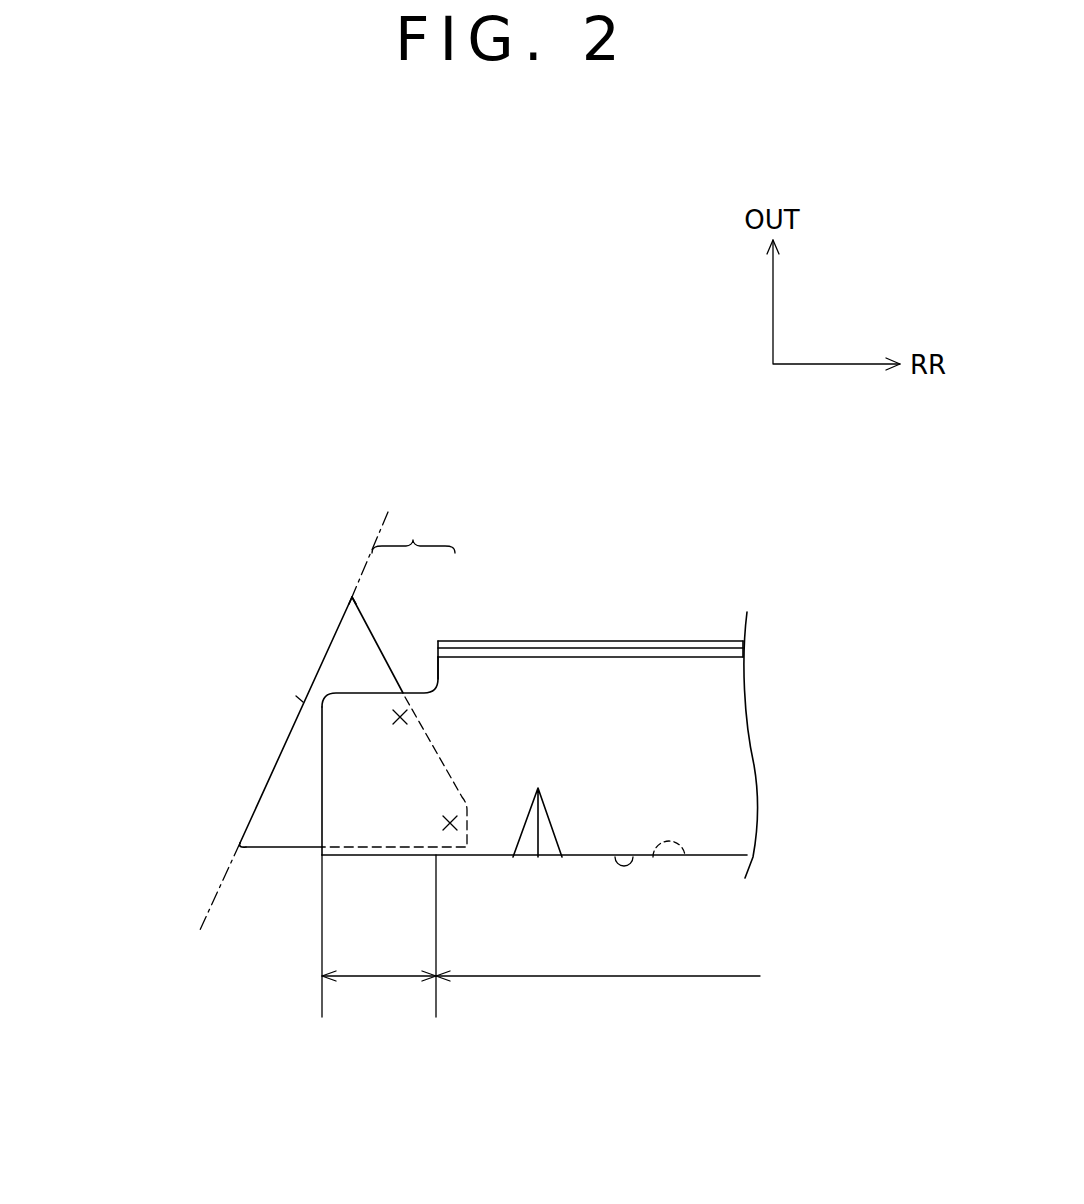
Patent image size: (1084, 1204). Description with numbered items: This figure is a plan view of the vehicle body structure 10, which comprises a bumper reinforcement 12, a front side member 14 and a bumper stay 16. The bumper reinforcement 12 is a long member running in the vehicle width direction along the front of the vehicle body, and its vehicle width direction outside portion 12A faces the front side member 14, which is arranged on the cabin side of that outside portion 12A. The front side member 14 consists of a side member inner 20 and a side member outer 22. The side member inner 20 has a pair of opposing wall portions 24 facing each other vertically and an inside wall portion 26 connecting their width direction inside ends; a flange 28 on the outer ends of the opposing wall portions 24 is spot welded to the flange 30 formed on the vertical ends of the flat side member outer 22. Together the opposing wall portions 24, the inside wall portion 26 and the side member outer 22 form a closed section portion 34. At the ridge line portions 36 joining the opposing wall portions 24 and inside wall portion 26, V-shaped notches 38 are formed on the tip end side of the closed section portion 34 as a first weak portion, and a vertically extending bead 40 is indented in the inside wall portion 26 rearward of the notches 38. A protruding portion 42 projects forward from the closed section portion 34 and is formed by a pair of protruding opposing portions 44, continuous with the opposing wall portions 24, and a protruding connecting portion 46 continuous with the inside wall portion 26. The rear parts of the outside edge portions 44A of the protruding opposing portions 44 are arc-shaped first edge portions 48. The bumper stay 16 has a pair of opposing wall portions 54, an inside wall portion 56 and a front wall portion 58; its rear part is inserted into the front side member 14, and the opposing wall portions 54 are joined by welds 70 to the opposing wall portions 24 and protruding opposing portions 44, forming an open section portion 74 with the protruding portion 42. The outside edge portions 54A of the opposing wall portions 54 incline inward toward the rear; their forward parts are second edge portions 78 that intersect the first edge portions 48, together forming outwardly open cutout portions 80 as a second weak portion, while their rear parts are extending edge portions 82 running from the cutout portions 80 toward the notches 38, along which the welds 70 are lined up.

The vehicle body structure 10 is at (535, 510).
The bumper reinforcement 12 is at (206, 907).
The vehicle width direction outside portion 12A is at (300, 698).
The front side member 14 is at (820, 548).
The bumper stay 16 is at (253, 849).
The side member inner 20 is at (744, 664).
The side member outer 22 is at (711, 640).
The opposing wall portions 24 is at (632, 693).
The inside wall portion 26 is at (587, 857).
The flange 28 is at (561, 657).
The flange 30 is at (507, 640).
The closed section portion 34 is at (613, 976).
The ridge line portions 36 is at (632, 857).
The notches 38 is at (548, 843).
The bead 40 is at (668, 857).
The protruding portion 42 is at (363, 859).
The protruding opposing portions 44 is at (340, 792).
The edge portions 44A is at (357, 692).
The protruding connecting portion 46 is at (405, 857).
The first edge portions 48 is at (427, 664).
The opposing wall portions 54 is at (292, 748).
The edge portions 54A is at (352, 588).
The inside wall portion 56 is at (290, 848).
The front wall portion 58 is at (240, 830).
The welds 70 is at (405, 715).
The open section portion 74 is at (380, 976).
The second edge portions 78 is at (382, 648).
The cutout portions 80 is at (413, 529).
The extending edge portions 82 is at (437, 750).